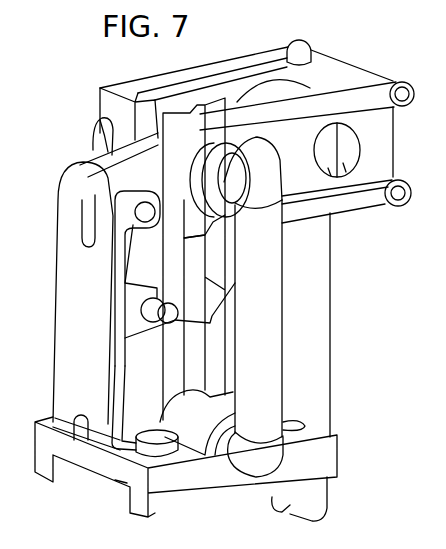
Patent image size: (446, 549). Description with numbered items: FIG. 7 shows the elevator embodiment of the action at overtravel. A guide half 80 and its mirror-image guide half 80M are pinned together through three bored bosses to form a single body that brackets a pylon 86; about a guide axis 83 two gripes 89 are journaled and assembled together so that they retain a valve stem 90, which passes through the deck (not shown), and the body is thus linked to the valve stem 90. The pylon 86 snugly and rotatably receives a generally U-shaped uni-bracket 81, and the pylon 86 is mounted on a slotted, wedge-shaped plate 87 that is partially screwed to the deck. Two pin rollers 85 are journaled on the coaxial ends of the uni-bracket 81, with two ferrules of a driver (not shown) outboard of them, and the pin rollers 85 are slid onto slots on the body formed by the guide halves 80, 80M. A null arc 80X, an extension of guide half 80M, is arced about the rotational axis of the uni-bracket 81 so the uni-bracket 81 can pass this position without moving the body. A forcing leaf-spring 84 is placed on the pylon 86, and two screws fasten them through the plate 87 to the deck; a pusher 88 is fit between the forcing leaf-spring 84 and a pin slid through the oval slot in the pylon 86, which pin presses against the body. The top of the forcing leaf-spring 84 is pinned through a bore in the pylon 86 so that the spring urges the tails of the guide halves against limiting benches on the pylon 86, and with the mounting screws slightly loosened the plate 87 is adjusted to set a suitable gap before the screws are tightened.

The guide half 80 is at (296, 67).
The mirror-image guide half 80M is at (356, 87).
The null arc 80X is at (205, 217).
The uni-bracket 81 is at (102, 145).
The guide axis 83 is at (335, 150).
The forcing leaf-spring 84 is at (95, 313).
The pin rollers 85 is at (110, 143).
The pylon 86 is at (207, 423).
The plate 87 is at (168, 500).
The pusher 88 is at (137, 318).
The gripes 89 is at (328, 168).
The valve stem 90 is at (317, 373).